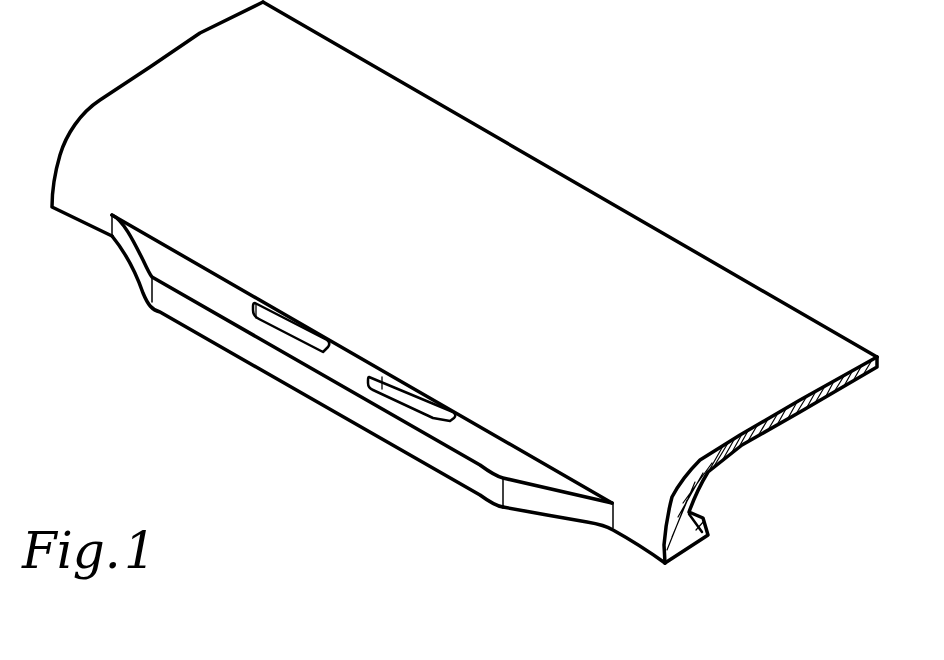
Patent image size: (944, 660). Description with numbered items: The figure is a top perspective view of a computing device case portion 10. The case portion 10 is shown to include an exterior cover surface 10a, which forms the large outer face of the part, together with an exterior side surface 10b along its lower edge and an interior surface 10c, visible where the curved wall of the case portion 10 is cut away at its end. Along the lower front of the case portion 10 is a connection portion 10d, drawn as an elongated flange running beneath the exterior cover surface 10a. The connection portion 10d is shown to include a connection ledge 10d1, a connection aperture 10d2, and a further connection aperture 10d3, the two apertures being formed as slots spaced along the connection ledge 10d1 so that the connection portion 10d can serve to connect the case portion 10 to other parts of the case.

The computing device case portion 10 is at (464, 313).
The exterior cover surface 10a is at (640, 260).
The exterior side surface 10b is at (640, 513).
The interior surface 10c is at (785, 427).
The connection portion 10d is at (362, 393).
The connection ledge 10d1 is at (460, 470).
The connection aperture 10d2 is at (412, 398).
The connection aperture 10d3 is at (280, 323).